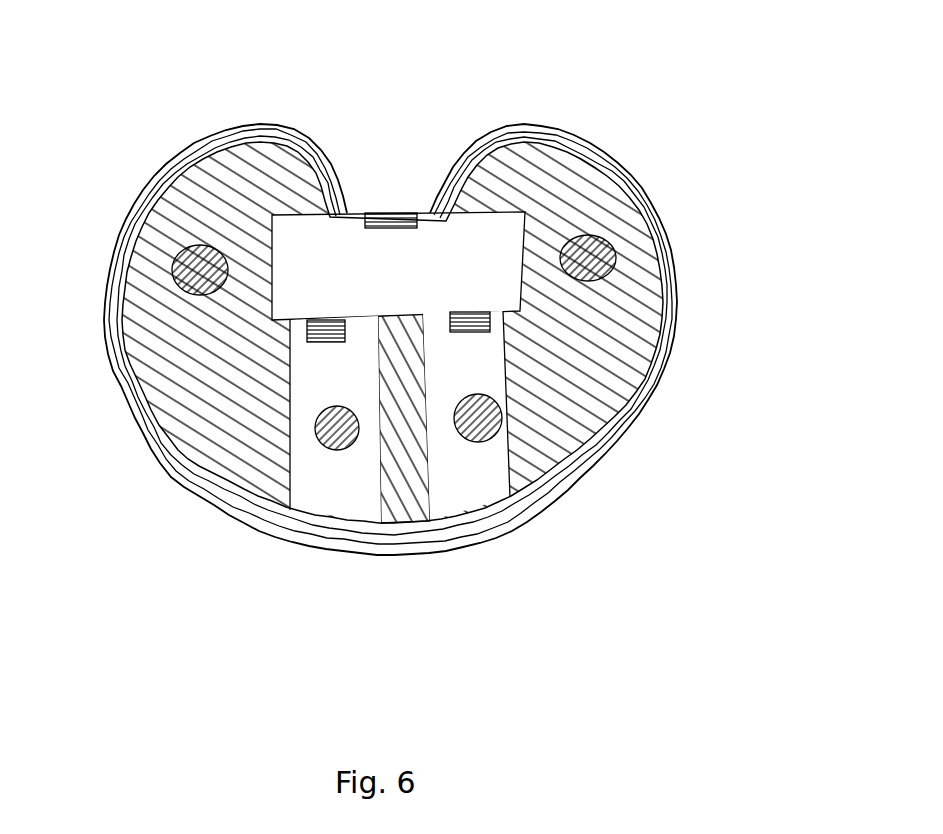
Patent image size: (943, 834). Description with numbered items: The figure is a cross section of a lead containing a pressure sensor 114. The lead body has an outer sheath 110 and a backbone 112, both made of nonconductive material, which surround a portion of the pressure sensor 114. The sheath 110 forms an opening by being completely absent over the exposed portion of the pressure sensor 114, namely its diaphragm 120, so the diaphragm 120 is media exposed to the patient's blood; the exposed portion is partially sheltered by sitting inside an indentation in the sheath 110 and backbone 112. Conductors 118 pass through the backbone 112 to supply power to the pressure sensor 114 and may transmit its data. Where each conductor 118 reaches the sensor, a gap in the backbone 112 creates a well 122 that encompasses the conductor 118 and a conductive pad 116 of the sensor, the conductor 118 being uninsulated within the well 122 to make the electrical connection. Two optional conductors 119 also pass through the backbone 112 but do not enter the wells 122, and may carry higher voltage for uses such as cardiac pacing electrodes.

The outer sheath 110 is at (600, 453).
The backbone 112 is at (610, 328).
The pressure sensor 114 is at (493, 245).
The conductive pad 116 is at (313, 343).
The conductors 118 is at (337, 450).
The optional conductors 119 is at (185, 252).
The diaphragm 120 is at (380, 213).
The well 122 is at (322, 387).